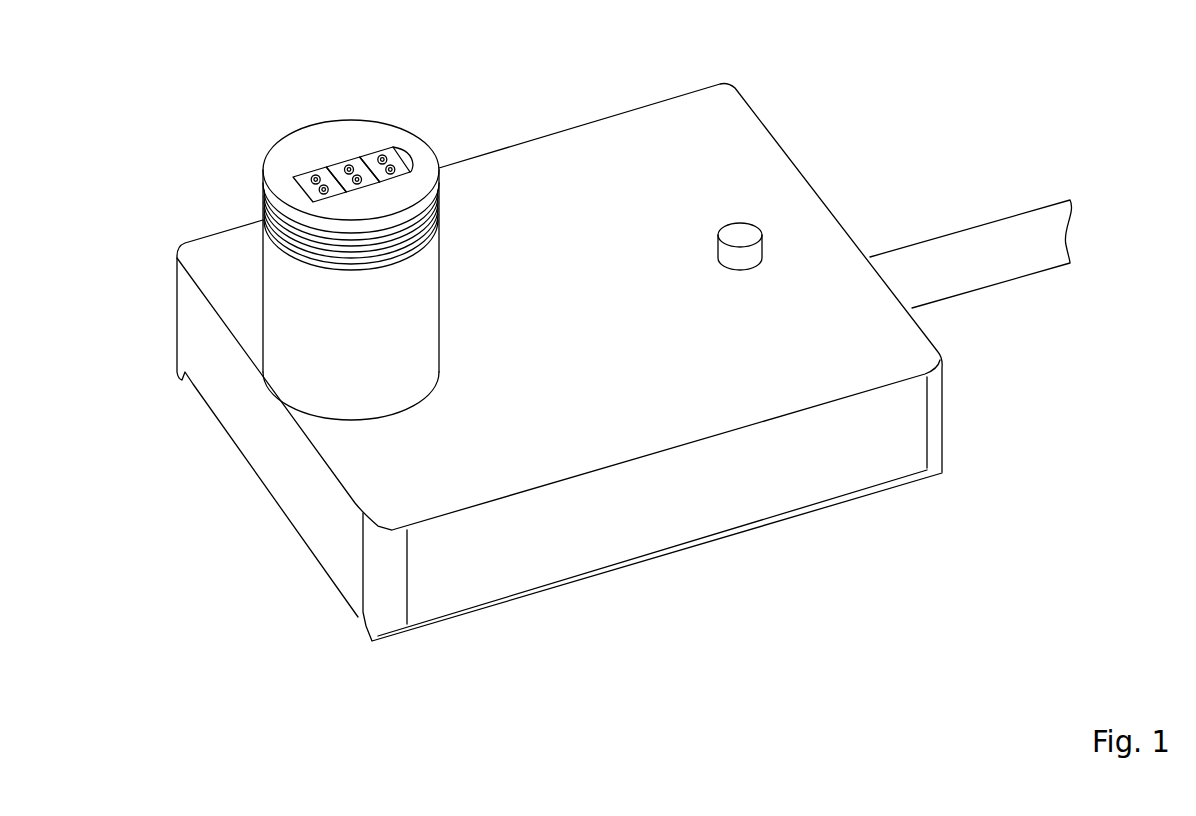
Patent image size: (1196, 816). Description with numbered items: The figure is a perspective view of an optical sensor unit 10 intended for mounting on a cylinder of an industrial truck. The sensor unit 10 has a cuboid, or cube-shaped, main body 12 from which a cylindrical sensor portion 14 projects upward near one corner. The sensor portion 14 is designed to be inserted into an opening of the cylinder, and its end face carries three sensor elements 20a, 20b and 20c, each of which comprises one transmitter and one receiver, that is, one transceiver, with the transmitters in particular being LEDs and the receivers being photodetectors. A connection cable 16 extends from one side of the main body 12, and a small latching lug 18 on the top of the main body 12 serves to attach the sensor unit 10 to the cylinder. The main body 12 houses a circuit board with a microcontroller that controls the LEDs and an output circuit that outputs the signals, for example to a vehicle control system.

The sensor unit 10 is at (248, 505).
The main body 12 is at (650, 403).
The sensor portion 14 is at (383, 132).
The connection cable 16 is at (950, 262).
The latching lug 18 is at (740, 238).
The sensor element 20a is at (293, 188).
The sensor element 20b is at (333, 162).
The sensor element 20c is at (370, 155).